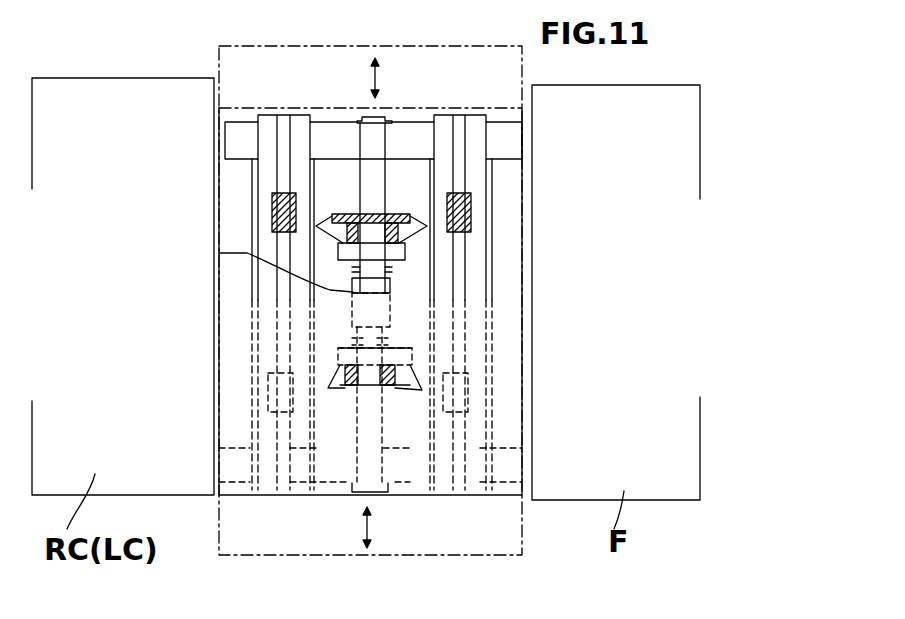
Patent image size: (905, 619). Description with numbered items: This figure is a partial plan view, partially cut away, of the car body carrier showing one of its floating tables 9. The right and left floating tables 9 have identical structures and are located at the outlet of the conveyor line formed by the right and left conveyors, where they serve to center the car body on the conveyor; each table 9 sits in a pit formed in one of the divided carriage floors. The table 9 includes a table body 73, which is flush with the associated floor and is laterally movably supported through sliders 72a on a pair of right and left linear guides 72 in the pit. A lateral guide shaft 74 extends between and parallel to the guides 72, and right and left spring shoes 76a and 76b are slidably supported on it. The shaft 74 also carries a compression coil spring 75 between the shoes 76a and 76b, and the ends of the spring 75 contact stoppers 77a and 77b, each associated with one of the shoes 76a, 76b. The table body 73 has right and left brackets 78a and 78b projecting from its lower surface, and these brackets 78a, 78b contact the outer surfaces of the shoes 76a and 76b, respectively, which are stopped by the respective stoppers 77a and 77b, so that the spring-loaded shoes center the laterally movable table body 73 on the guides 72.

The floating table 9 is at (256, 497).
The linear guide 72 is at (282, 243).
The slider 72a is at (272, 213).
The table body 73 is at (403, 490).
The lateral guide shaft 74 is at (377, 186).
The compression coil spring 75 is at (355, 268).
The spring shoe 76a is at (352, 255).
The spring shoe 76b is at (398, 352).
The stopper 77a is at (322, 227).
The stopper 77b is at (326, 374).
The bracket 78a is at (343, 213).
The bracket 78b is at (343, 390).